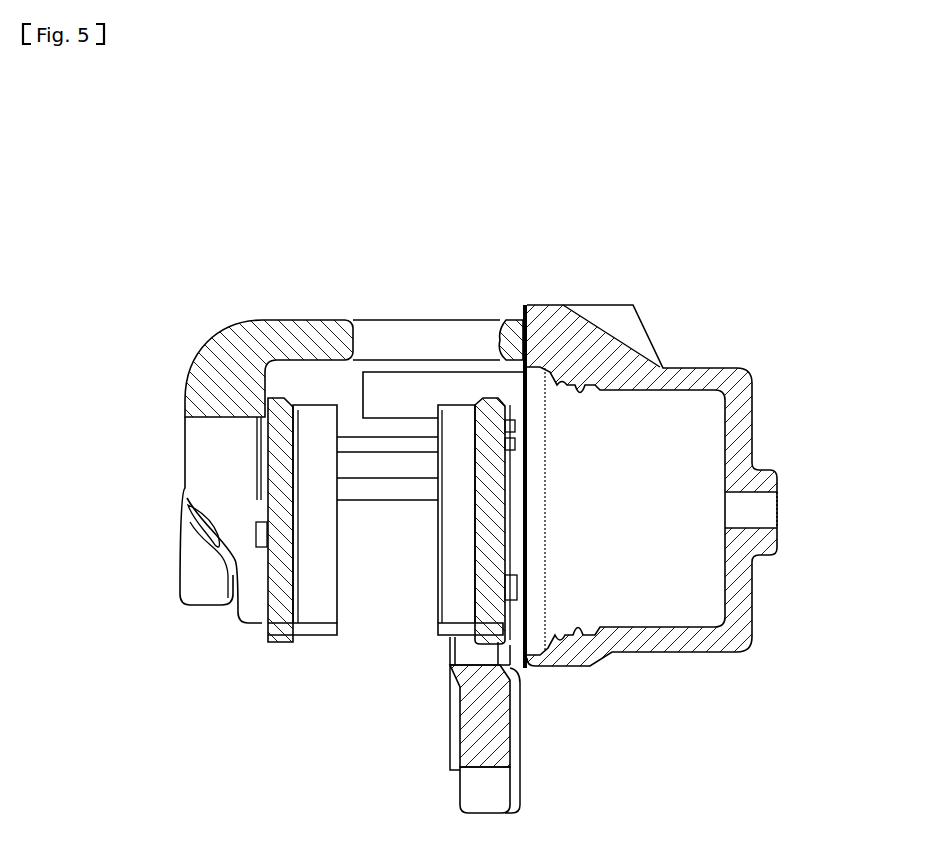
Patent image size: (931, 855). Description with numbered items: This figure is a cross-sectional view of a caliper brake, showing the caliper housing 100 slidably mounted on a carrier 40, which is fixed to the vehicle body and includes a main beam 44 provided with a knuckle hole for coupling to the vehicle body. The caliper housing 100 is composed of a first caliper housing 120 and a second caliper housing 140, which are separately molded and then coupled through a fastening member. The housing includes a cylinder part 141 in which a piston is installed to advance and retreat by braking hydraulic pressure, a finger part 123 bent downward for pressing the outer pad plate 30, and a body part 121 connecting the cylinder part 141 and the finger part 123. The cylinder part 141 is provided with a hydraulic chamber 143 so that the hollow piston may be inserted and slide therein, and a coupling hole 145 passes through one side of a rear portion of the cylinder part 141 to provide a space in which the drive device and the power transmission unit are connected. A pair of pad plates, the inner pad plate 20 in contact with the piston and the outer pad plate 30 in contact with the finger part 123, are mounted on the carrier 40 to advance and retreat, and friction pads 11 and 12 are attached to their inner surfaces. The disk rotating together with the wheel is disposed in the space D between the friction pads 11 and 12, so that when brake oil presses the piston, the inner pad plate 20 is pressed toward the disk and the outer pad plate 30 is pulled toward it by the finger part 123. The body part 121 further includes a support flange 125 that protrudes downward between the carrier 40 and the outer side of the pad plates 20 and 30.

The caliper housing 100 is at (537, 212).
The first caliper housing 120 is at (504, 305).
The body part 121 is at (378, 325).
The finger part 123 is at (205, 468).
The support flange 125 is at (410, 397).
The second caliper housing 140 is at (606, 296).
The cylinder part 141 is at (690, 655).
The hydraulic chamber 143 is at (643, 465).
The coupling hole 145 is at (760, 512).
The friction pad 11 is at (450, 598).
The friction pad 12 is at (316, 607).
The inner pad plate 20 is at (500, 600).
The outer pad plate 30 is at (282, 612).
The carrier 40 is at (515, 655).
The main beam 44 is at (472, 740).
The space D is at (392, 580).